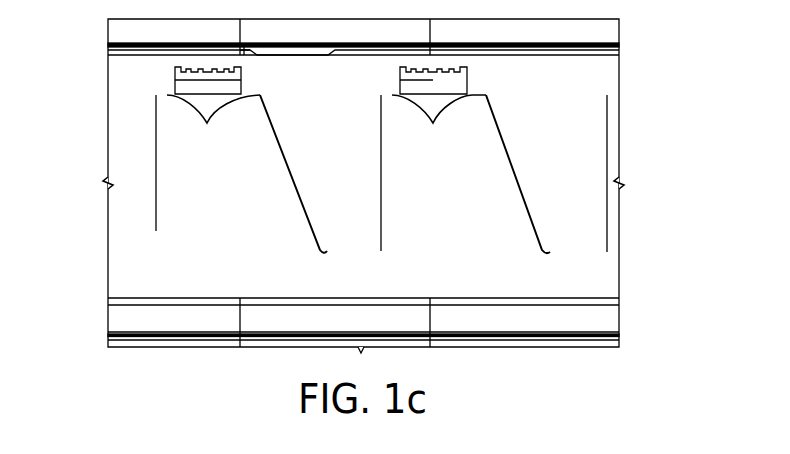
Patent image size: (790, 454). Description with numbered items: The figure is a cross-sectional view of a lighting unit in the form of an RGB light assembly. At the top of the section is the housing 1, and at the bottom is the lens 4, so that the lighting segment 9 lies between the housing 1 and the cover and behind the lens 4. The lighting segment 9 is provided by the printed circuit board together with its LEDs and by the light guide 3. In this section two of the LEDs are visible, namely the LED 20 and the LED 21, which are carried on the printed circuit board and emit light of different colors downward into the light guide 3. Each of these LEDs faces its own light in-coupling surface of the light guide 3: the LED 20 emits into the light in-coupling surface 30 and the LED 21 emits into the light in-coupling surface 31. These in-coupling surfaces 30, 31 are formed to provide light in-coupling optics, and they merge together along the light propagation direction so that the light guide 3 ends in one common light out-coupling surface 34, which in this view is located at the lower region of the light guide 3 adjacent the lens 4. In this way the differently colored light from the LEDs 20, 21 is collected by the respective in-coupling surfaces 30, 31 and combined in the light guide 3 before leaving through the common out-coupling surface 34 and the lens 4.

The housing 1 is at (117, 34).
The light guide 3 is at (446, 262).
The lens 4 is at (115, 320).
The lighting segment 9 is at (629, 217).
The LED 20 is at (175, 80).
The LED 21 is at (458, 79).
The light in-coupling surface 30 is at (157, 145).
The light in-coupling surface 31 is at (473, 141).
The light out-coupling surface 34 is at (523, 300).